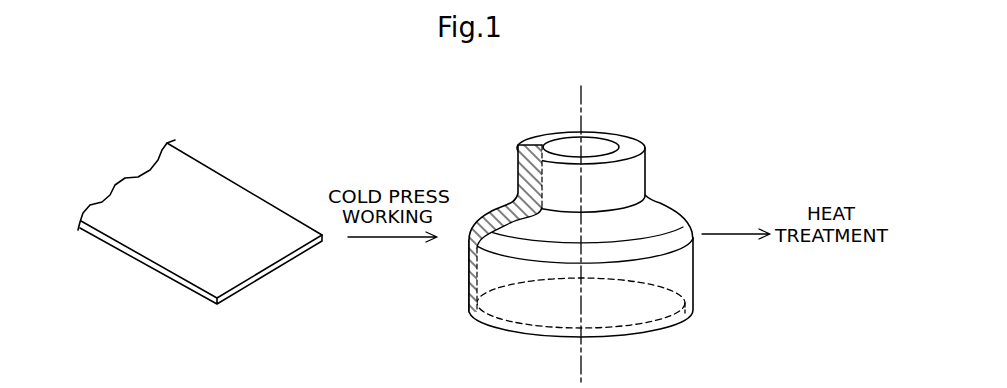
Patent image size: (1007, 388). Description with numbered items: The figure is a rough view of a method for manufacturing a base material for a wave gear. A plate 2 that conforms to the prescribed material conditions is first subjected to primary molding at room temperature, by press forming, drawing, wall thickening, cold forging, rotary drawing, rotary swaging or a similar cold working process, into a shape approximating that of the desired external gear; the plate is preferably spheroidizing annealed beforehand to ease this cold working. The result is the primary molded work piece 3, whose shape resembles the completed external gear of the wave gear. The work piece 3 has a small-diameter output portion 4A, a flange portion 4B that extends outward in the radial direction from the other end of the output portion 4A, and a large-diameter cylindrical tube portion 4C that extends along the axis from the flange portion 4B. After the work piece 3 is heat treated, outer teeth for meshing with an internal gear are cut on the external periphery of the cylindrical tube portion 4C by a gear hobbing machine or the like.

The plate 2 is at (223, 187).
The primary molded work piece 3 is at (569, 223).
The small-diameter output portion 4A is at (517, 164).
The flange portion 4B is at (498, 206).
The large-diameter cylindrical tube portion 4C is at (470, 270).